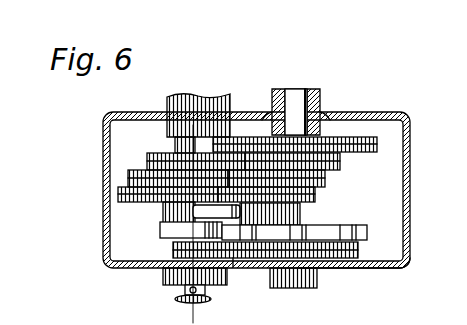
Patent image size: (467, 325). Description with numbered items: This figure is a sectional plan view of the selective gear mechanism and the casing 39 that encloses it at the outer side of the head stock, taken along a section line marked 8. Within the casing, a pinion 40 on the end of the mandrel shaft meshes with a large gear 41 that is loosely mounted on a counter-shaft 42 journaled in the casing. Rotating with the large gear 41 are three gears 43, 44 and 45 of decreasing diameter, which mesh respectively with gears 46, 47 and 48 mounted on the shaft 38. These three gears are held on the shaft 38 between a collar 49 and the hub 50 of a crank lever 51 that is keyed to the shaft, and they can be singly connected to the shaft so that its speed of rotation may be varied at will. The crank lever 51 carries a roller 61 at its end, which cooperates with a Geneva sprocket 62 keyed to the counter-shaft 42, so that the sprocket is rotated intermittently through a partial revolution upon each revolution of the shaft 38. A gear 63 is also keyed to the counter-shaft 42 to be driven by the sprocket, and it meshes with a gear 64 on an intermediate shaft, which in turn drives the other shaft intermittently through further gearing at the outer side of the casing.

The section line 8- 8 is at (195, 125).
The shaft 38 is at (152, 265).
The casing 39 is at (105, 140).
The pinion 40 is at (307, 138).
The large gear 41 is at (377, 145).
The counter-shaft 42 is at (290, 290).
The gear 43 is at (342, 167).
The gear 44 is at (325, 183).
The gear 45 is at (317, 197).
The gear 46 is at (145, 162).
The gear 47 is at (138, 178).
The gear 48 is at (118, 196).
The collar 49 is at (238, 117).
The hub 50 is at (170, 210).
The crank lever 51 is at (162, 227).
The roller 61 is at (233, 267).
The Geneva sprocket 62 is at (340, 230).
The gear 63 is at (357, 255).
The gear 64 is at (357, 268).